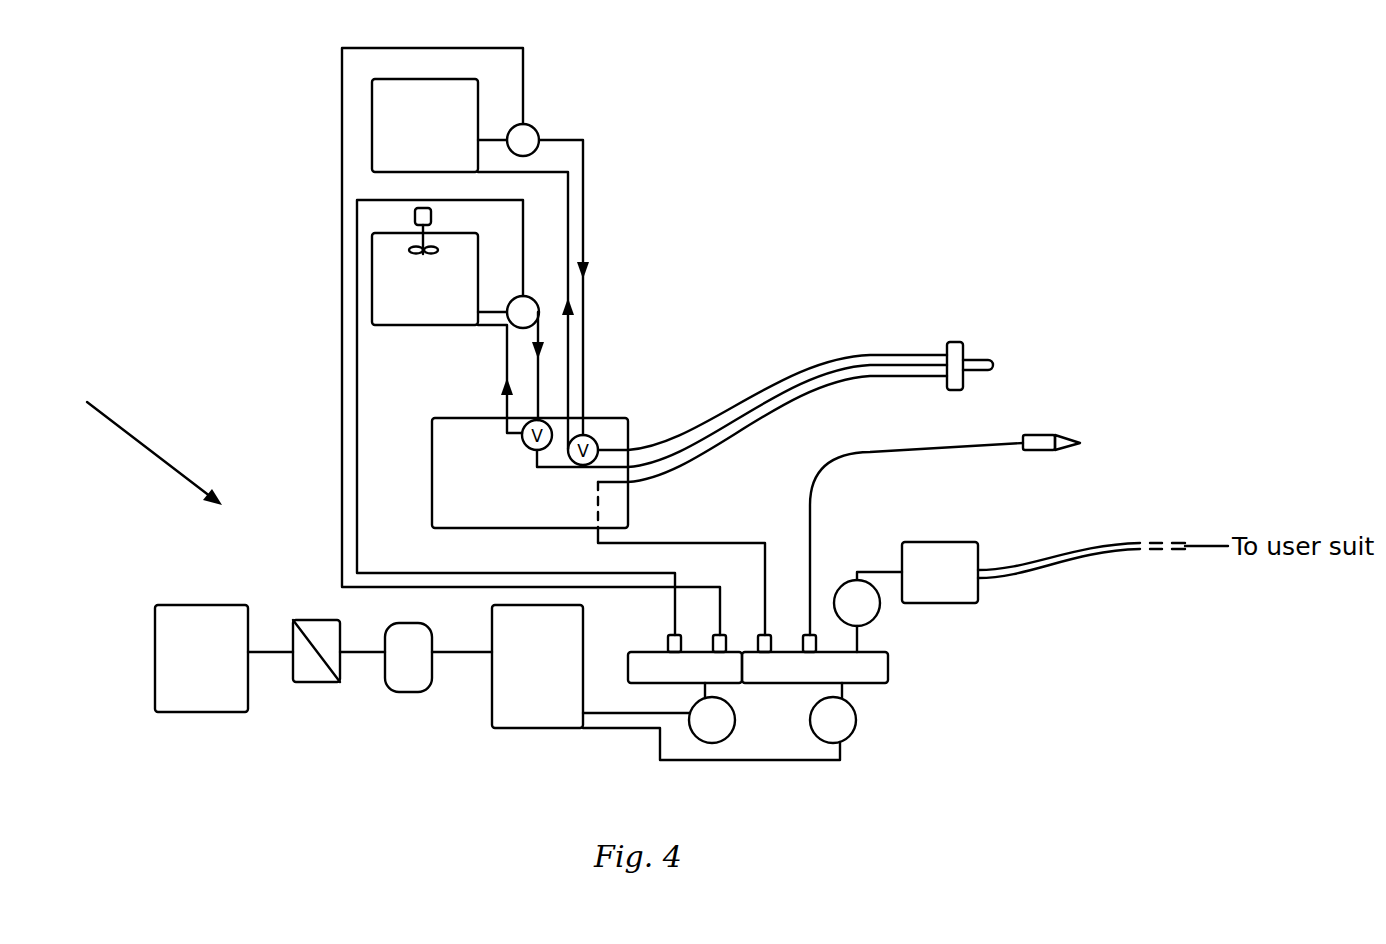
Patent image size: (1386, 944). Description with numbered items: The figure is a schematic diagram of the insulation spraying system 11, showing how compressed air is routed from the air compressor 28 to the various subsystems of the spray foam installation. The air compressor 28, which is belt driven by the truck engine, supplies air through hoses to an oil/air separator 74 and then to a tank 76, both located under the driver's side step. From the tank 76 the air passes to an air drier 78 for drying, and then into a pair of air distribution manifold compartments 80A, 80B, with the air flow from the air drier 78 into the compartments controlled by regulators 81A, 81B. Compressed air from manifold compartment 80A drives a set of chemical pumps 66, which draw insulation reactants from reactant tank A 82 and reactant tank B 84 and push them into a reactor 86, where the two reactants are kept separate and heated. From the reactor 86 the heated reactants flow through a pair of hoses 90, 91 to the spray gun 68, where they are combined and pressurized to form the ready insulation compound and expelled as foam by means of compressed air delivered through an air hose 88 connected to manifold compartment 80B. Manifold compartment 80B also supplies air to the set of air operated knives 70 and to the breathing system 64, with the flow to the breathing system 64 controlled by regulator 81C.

The insulation spraying system 11 is at (141, 440).
The air compressor 28 is at (197, 660).
The breathing system 64 is at (940, 568).
The chemical pumps 66 is at (527, 137).
The spray gun 68 is at (952, 362).
The air operated knives 70 is at (1070, 437).
The oil/air separator 74 is at (310, 663).
The tank 76 is at (403, 668).
The air drier 78 is at (533, 675).
The air distribution manifold compartment 80A is at (688, 668).
The air distribution manifold compartment 80B is at (795, 668).
The regulator 81A is at (710, 723).
The regulator 81B is at (833, 723).
The regulator 81C is at (858, 605).
The reactant tank A 82 is at (390, 128).
The reactant tank B 84 is at (390, 280).
The E-30 reactor 86 is at (455, 470).
The air hose 88 is at (775, 425).
The hose 90 is at (728, 415).
The hose 91 is at (832, 385).